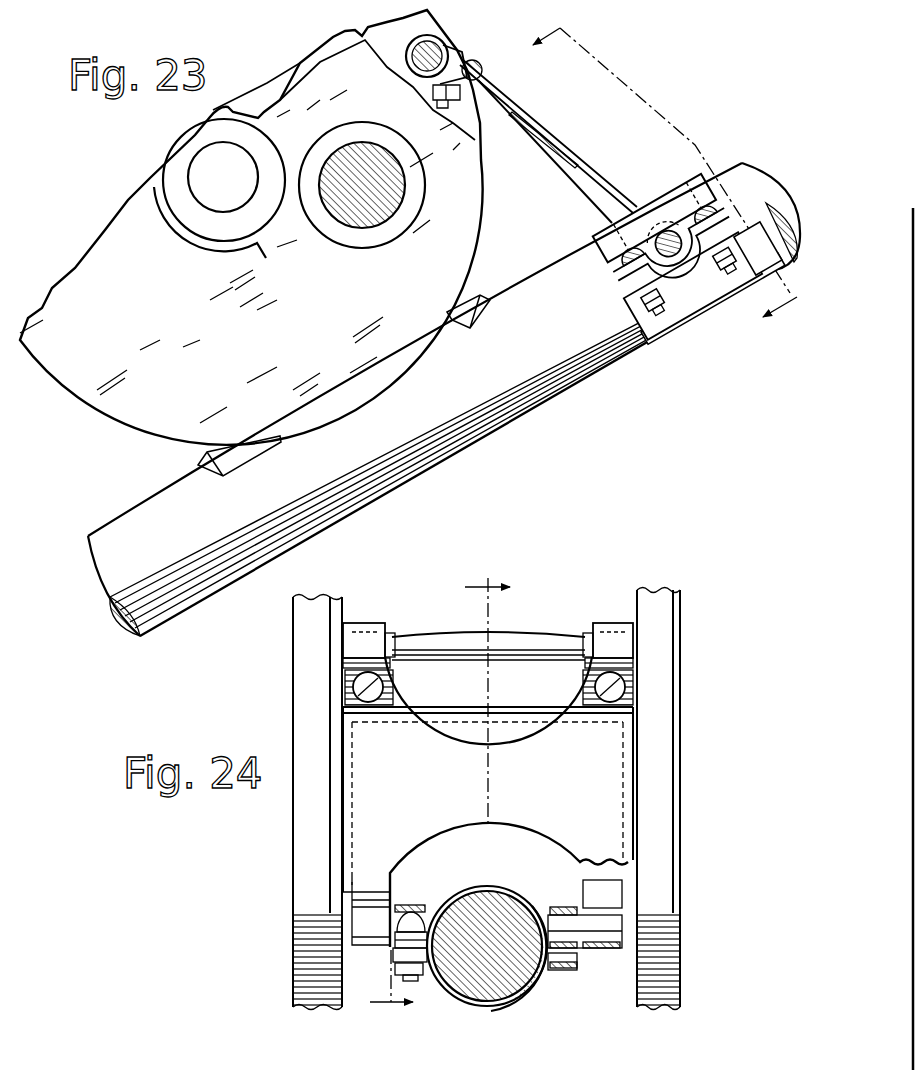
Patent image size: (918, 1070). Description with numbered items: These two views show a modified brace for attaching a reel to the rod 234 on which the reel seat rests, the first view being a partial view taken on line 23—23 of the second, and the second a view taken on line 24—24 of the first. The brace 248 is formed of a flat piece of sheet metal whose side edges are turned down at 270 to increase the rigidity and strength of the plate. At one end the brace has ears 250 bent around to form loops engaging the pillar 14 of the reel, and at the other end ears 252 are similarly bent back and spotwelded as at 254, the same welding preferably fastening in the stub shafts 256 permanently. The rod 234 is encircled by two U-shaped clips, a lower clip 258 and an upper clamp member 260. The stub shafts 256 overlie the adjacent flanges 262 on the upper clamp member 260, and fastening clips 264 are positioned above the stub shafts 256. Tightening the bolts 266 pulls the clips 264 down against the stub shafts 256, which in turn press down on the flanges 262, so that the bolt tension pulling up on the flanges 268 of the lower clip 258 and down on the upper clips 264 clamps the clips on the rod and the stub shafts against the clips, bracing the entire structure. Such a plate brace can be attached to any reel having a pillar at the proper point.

In FIG. 24, the pillar 14 is at (518, 643).
In FIG. 24, the section line 23— 23 is at (440, 790).
In FIG. 23, the section line 24— 24 is at (667, 176).
In FIG. 23, the rod 234 is at (527, 397).
In FIG. 24, the rod 234 is at (515, 908).
In FIG. 23, the brace 248 is at (535, 128).
In FIG. 24, the brace 248 is at (530, 757).
In FIG. 23, the ears 250 is at (428, 36).
In FIG. 24, the ears 250 is at (368, 632).
In FIG. 24, the ears 252 is at (375, 892).
In FIG. 23, the spotweld 254 is at (657, 213).
In FIG. 24, the spotweld 254 is at (470, 888).
In FIG. 23, the stub shafts 256 is at (705, 318).
In FIG. 24, the stub shafts 256 is at (600, 948).
In FIG. 23, the lower U-shaped clip 258 is at (667, 337).
In FIG. 24, the lower U-shaped clip 258 is at (488, 1008).
In FIG. 23, the upper U-shaped clip 260 is at (610, 240).
In FIG. 23, the flanges 262 is at (617, 278).
In FIG. 24, the flanges 262 is at (563, 970).
In FIG. 23, the fastening clips 264 is at (628, 262).
In FIG. 24, the fastening clips 264 is at (417, 912).
In FIG. 23, the bolts 266 is at (647, 297).
In FIG. 24, the bolts 266 is at (413, 977).
In FIG. 23, the flanges 268 is at (636, 298).
In FIG. 24, the flanges 268 is at (397, 957).
In FIG. 23, the turned-down side edges 270 is at (557, 165).